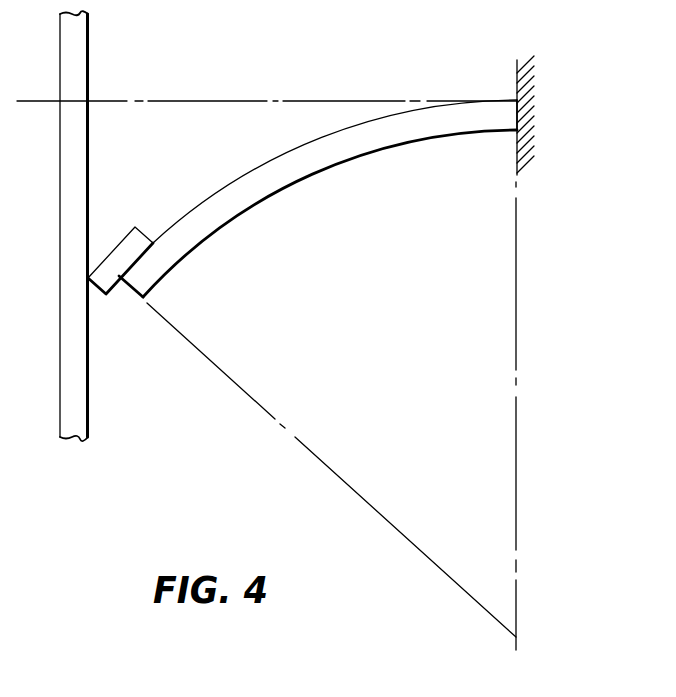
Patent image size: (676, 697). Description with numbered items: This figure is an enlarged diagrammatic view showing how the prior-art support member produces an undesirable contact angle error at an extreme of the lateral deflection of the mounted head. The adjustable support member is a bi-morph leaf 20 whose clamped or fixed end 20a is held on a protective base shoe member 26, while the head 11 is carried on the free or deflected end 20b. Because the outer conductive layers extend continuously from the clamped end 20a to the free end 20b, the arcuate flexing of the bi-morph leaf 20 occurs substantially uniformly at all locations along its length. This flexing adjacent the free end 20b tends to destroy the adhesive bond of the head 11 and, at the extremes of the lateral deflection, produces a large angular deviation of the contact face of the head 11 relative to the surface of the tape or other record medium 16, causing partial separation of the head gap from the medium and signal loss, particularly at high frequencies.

The record medium 16 is at (60, 288).
The head 11 is at (126, 244).
The bi-morph leaf 20 is at (347, 163).
The clamped end 20a is at (518, 114).
The free end 20b is at (134, 289).
The protective base shoe member 26 is at (517, 80).